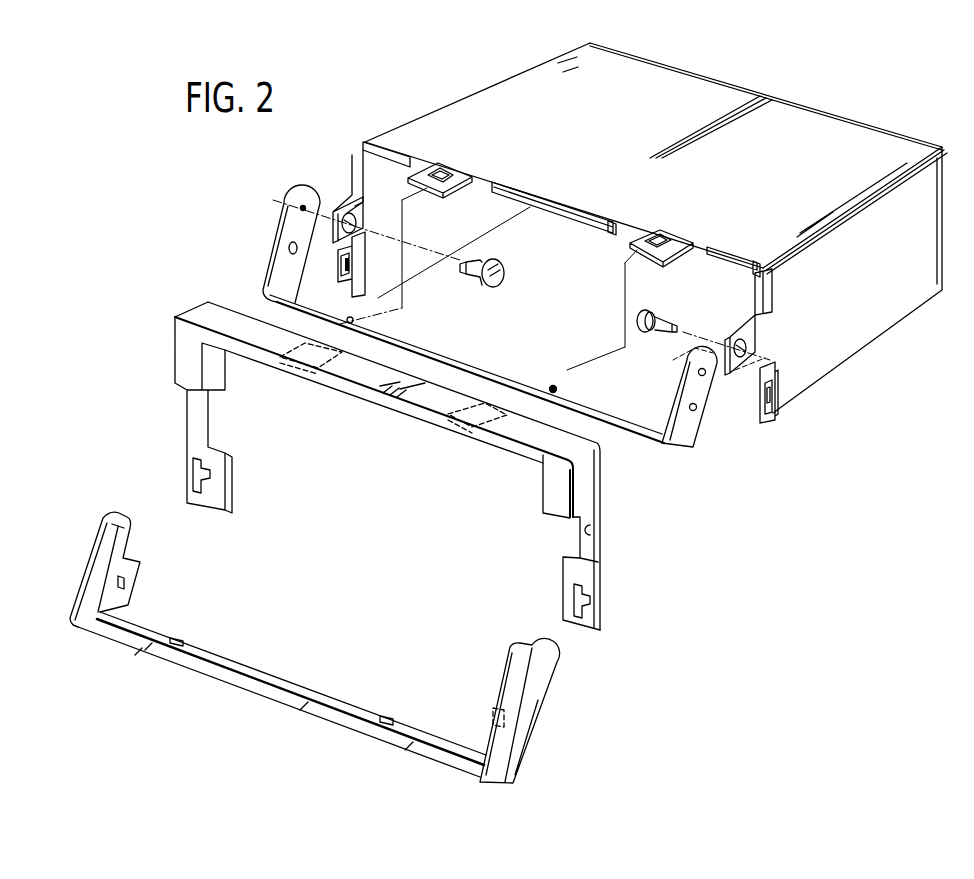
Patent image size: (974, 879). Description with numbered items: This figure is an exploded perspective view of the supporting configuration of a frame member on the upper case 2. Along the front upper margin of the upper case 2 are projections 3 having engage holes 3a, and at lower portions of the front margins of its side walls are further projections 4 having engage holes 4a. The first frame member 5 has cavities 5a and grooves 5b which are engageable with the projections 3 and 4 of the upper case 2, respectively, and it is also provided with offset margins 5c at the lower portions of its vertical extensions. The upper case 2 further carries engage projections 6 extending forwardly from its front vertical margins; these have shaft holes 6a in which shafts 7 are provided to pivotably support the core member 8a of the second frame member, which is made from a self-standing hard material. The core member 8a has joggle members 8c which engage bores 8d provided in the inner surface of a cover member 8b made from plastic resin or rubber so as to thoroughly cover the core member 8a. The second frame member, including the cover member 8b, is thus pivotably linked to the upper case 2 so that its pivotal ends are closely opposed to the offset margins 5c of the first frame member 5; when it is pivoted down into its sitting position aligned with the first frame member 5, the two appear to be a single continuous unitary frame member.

The upper case 2 is at (447, 126).
The projections 3 is at (435, 194).
The engage holes 3a is at (445, 173).
The projections 4 is at (338, 268).
The engage holes 4a is at (358, 266).
The first frame member 5 is at (405, 410).
The cavities 5a is at (303, 365).
The grooves 5b is at (193, 476).
The offset margins 5c is at (186, 405).
The engage projections 6 is at (335, 230).
The shaft holes 6a is at (346, 215).
The shafts 7 is at (505, 274).
The core member 8a is at (465, 358).
The cover member 8b is at (318, 688).
The joggle members 8c is at (554, 385).
The bores 8d is at (176, 638).